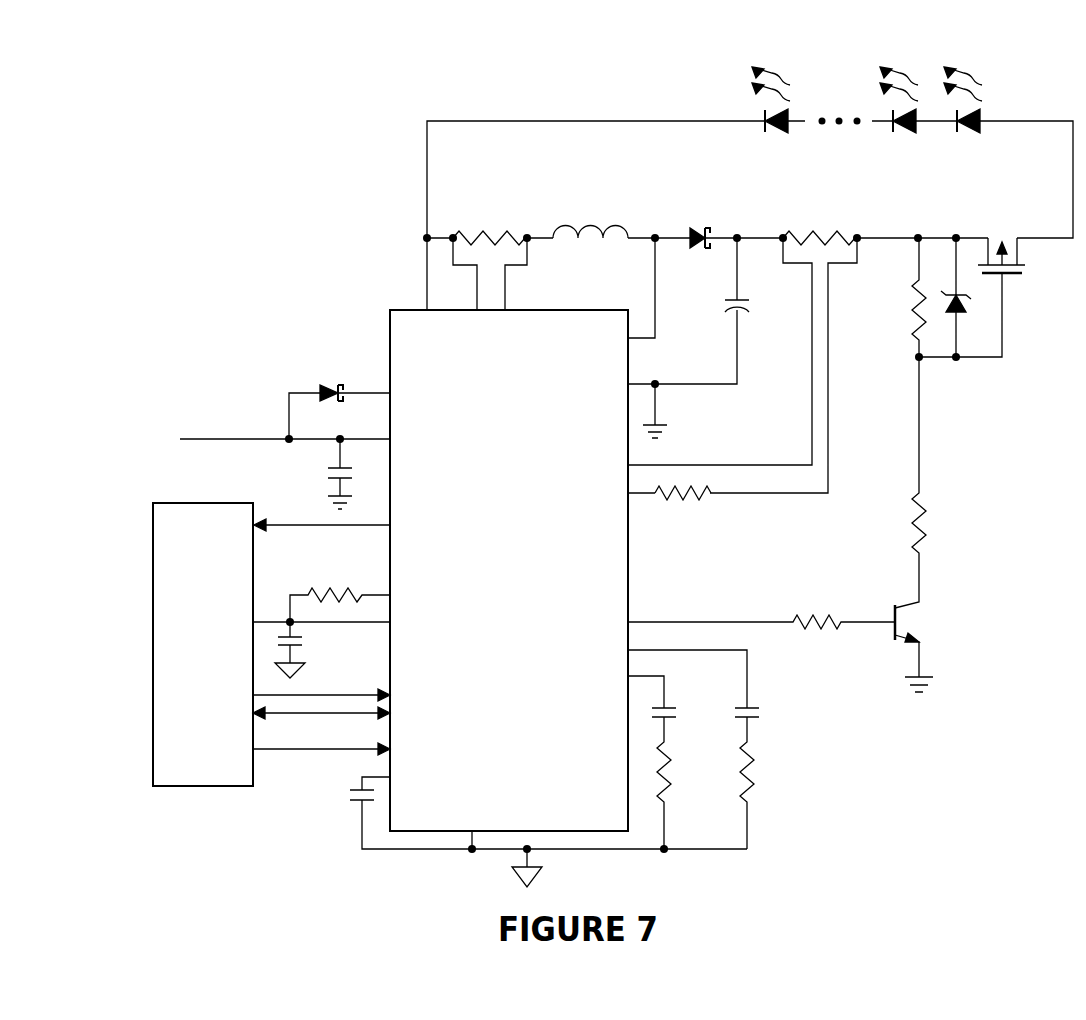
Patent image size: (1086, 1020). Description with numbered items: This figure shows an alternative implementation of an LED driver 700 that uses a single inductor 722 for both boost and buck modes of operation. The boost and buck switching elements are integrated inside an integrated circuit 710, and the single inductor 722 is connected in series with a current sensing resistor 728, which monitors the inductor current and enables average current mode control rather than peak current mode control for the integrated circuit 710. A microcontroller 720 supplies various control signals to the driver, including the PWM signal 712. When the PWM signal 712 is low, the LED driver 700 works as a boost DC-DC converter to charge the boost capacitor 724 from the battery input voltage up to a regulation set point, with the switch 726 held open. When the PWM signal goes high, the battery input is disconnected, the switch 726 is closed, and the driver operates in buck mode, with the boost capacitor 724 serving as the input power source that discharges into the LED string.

The LED driver 700 is at (566, 454).
The integrated circuit 710 is at (509, 570).
The PWM signal 712 is at (308, 752).
The microcontroller 720 is at (153, 610).
The single inductor 722 is at (620, 232).
The CBOOST capacitor 724 is at (740, 305).
The switch P1 726 is at (1010, 278).
The current sensing resistor 728 is at (515, 232).